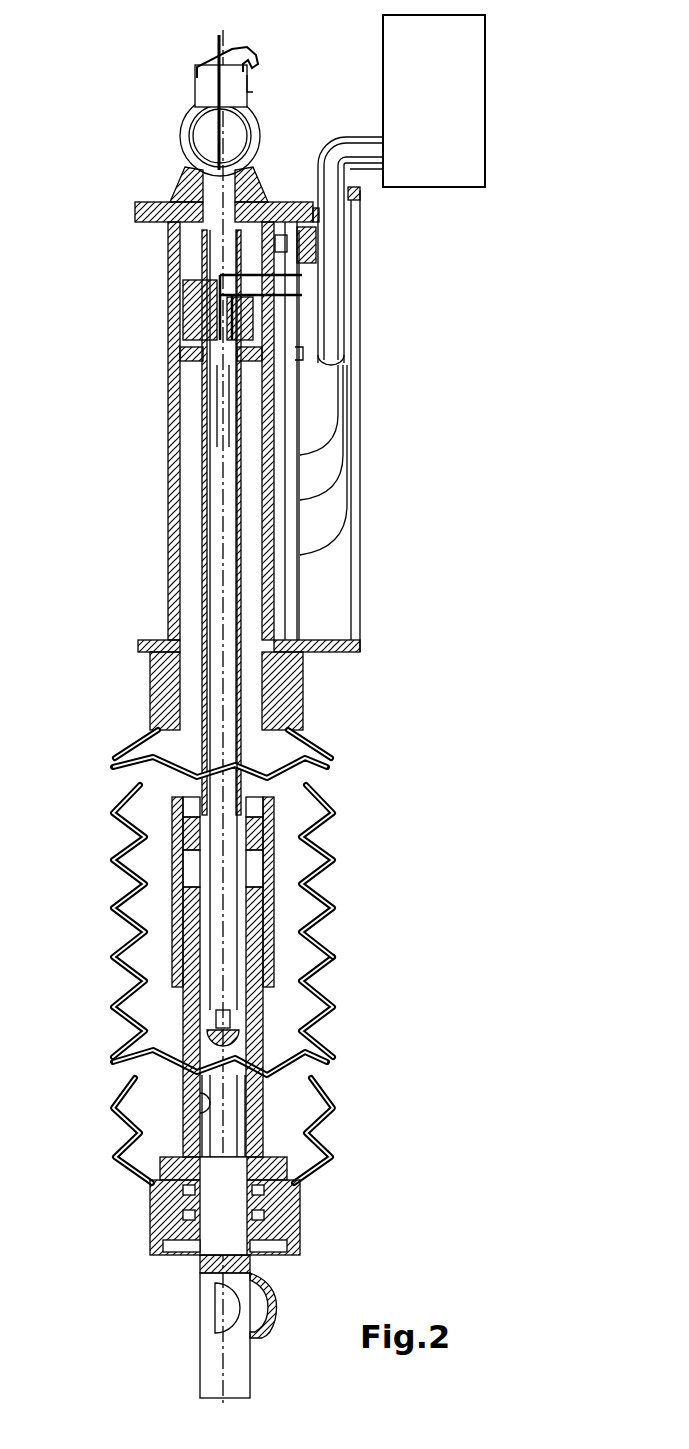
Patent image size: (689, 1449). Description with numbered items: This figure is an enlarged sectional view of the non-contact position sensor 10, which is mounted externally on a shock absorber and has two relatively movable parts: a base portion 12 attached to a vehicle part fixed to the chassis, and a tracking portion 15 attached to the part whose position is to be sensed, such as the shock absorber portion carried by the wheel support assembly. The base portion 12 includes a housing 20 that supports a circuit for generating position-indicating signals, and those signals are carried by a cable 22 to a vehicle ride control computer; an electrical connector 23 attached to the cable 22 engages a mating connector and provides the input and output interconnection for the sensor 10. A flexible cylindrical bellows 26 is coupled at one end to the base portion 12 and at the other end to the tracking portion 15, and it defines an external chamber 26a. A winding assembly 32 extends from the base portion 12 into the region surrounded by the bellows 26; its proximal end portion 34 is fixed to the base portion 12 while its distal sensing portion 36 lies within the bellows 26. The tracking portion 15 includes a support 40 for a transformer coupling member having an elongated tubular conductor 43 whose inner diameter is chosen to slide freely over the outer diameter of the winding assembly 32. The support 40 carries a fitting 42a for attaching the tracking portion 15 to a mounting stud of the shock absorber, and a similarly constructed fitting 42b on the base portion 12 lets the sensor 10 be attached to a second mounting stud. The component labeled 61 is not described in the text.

The non-contact position sensor 10 is at (350, 976).
The base portion 12 is at (170, 525).
The tracking portion 15 is at (276, 1143).
The housing 20 is at (360, 495).
The cable 22 is at (350, 158).
The electrical connector 23 is at (445, 112).
The flexible cylindrical bellows 26 is at (335, 855).
The external chamber 26a is at (300, 910).
The winding assembly 32 is at (250, 792).
The proximal end portion 34 is at (190, 380).
The distal sensing portion 36 is at (203, 798).
The support 40 is at (158, 1150).
The fitting 42a is at (235, 1330).
The fitting 42b is at (236, 92).
The elongated tubular conductor 43 is at (200, 1096).
The sensor rod 61 is at (297, 602).